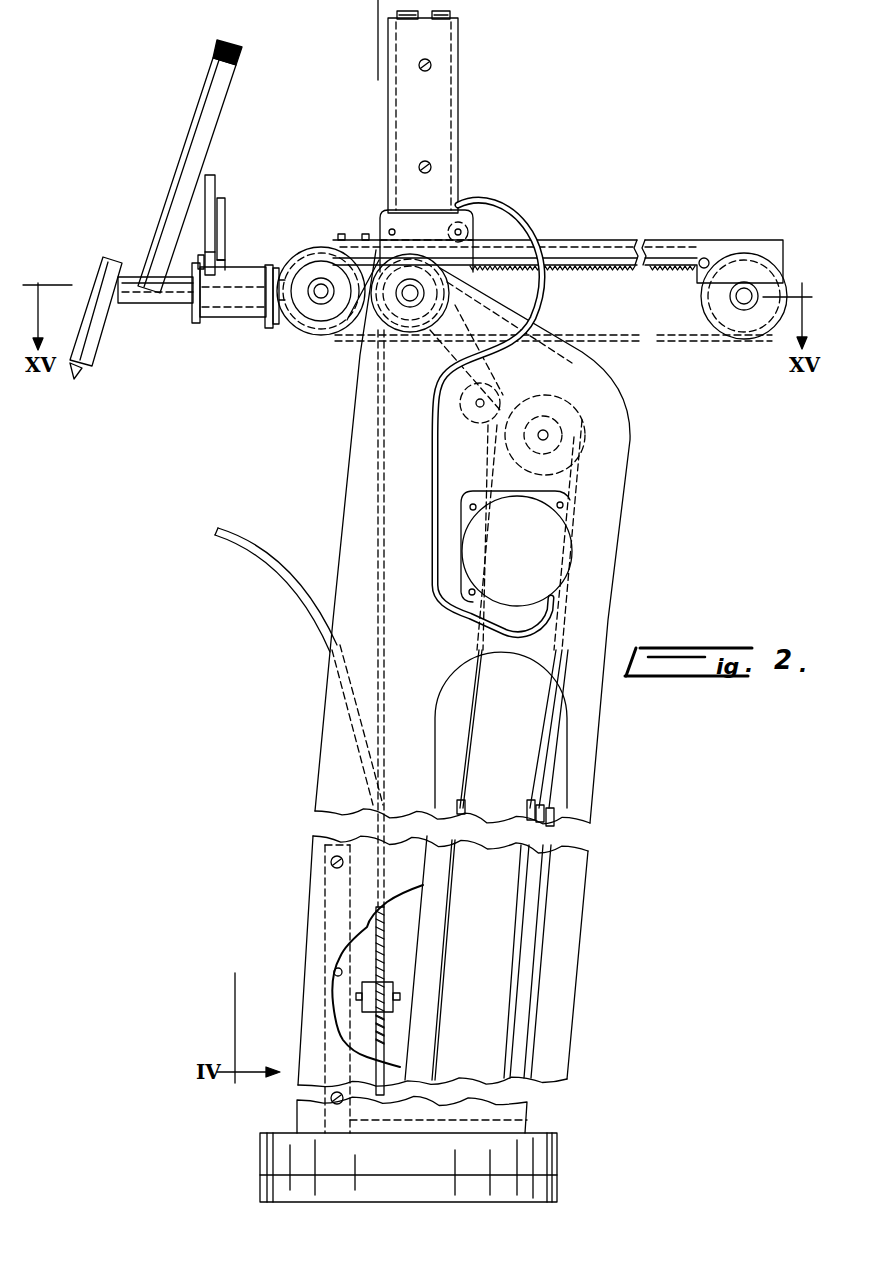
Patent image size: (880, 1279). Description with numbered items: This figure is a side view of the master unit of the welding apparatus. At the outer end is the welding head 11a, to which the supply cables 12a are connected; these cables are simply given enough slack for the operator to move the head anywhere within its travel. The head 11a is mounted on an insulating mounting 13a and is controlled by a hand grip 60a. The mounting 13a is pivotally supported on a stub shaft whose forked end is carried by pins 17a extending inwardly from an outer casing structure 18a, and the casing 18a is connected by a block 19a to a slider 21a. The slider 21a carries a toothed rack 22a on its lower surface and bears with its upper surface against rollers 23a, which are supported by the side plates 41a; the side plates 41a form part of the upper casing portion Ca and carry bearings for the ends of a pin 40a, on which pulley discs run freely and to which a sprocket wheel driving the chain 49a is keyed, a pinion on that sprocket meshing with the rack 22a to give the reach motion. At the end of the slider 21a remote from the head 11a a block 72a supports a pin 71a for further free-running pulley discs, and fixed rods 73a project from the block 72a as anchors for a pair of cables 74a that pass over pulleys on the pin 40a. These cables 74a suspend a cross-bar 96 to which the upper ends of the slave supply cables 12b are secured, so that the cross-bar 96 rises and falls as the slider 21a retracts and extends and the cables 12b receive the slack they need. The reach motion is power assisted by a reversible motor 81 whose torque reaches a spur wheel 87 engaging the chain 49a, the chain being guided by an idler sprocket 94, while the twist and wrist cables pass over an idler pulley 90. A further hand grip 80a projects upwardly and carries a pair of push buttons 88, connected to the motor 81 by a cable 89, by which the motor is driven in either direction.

The push buttons 88 is at (420, 18).
The hand grip 80a is at (440, 112).
The rollers 23a is at (397, 223).
The toothed rack 22a is at (582, 267).
The slider 21a is at (660, 245).
The block 72a is at (757, 245).
The pin 71a is at (745, 300).
The fixed rods 73a is at (705, 258).
The outer casing structure 18a is at (317, 267).
The pins 17a is at (320, 298).
The block 19a is at (355, 245).
The pin 40a is at (407, 300).
The side plates 41a is at (483, 297).
The hand grip 60a is at (193, 126).
The welding head 11a is at (167, 322).
The supply cables 12a is at (226, 200).
The insulating mounting 13a is at (227, 307).
The upper casing portion Ca is at (606, 546).
The cables 74a is at (380, 526).
The supply cables 12b is at (286, 588).
The cable 89 is at (433, 447).
The idler sprocket 94 is at (478, 404).
The idler pulley 90 is at (585, 419).
The spur wheel 87 is at (548, 438).
The chain 49a is at (497, 472).
The motor 81 is at (520, 558).
The cross-bar 96 is at (373, 994).